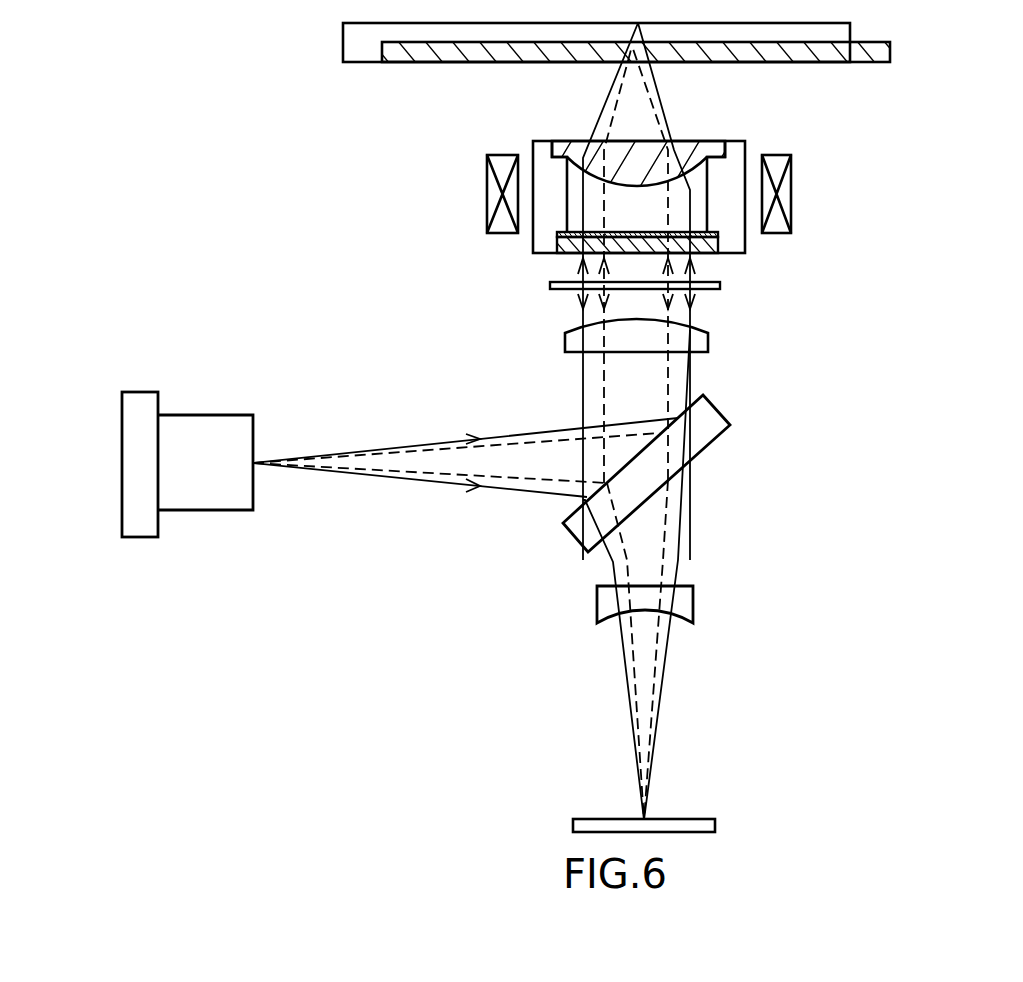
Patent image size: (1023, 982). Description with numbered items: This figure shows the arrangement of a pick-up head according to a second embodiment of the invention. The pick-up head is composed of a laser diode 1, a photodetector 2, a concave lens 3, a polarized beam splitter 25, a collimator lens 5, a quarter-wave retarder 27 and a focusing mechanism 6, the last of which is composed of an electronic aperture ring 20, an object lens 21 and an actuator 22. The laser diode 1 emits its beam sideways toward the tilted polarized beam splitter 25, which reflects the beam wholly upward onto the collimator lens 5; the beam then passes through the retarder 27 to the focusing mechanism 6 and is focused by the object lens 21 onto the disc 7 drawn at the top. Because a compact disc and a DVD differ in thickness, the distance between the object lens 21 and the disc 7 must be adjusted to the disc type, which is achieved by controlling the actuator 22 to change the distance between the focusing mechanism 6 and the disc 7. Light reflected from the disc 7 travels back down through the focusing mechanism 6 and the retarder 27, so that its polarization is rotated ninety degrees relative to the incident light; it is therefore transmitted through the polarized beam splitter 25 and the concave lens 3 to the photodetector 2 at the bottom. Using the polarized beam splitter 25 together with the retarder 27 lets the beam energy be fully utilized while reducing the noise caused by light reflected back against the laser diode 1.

The laser diode 1 is at (138, 506).
The photodetector 2 is at (597, 825).
The concave lens 3 is at (685, 605).
The collimator lens 5 is at (693, 342).
The focusing mechanism 6 is at (688, 184).
The disc 7 is at (900, 57).
The electronic aperture ring 20 is at (700, 248).
The object lens 21 is at (702, 148).
The actuator 22 is at (498, 197).
The polarized beam splitter 25 is at (707, 433).
The ¼-λ retarder 27 is at (567, 285).